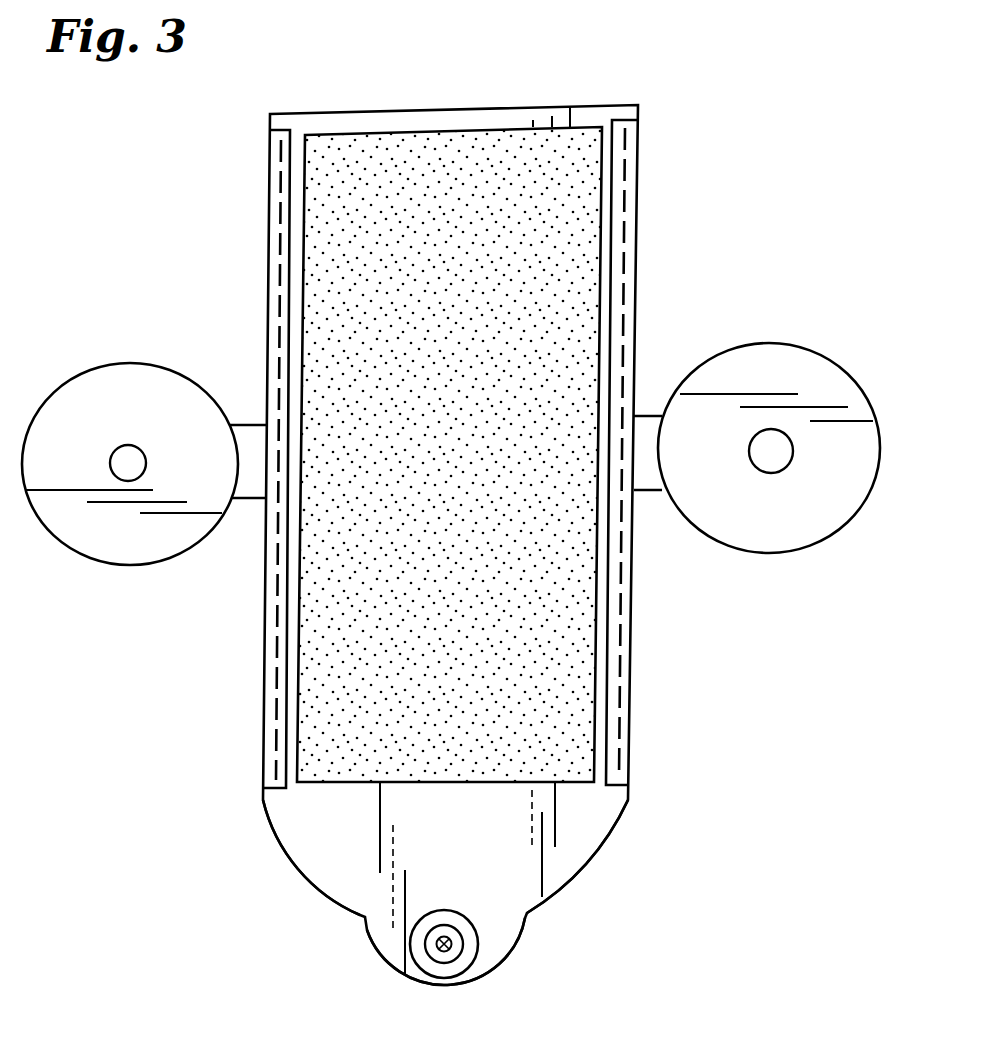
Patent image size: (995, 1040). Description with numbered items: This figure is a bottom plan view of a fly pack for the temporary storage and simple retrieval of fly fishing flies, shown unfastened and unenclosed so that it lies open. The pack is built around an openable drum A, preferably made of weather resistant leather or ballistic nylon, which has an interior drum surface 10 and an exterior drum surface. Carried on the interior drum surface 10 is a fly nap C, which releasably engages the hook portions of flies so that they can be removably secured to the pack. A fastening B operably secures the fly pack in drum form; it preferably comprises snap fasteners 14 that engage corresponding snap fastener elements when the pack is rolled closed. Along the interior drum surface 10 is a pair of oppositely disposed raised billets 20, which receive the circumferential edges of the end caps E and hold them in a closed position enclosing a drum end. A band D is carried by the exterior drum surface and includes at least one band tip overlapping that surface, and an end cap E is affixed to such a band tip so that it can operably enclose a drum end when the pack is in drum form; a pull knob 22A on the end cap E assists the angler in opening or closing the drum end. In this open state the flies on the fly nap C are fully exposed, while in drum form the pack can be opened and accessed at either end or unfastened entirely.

The interior drum surface 10 is at (590, 792).
The raised billets 20 is at (625, 138).
The snap fasteners 14 is at (437, 945).
The wheel axle 22A is at (130, 463).
The fly nap C is at (462, 200).
The end cap E is at (127, 390).
The band D is at (654, 480).
The openable drum A is at (583, 866).
The fastening B is at (440, 973).